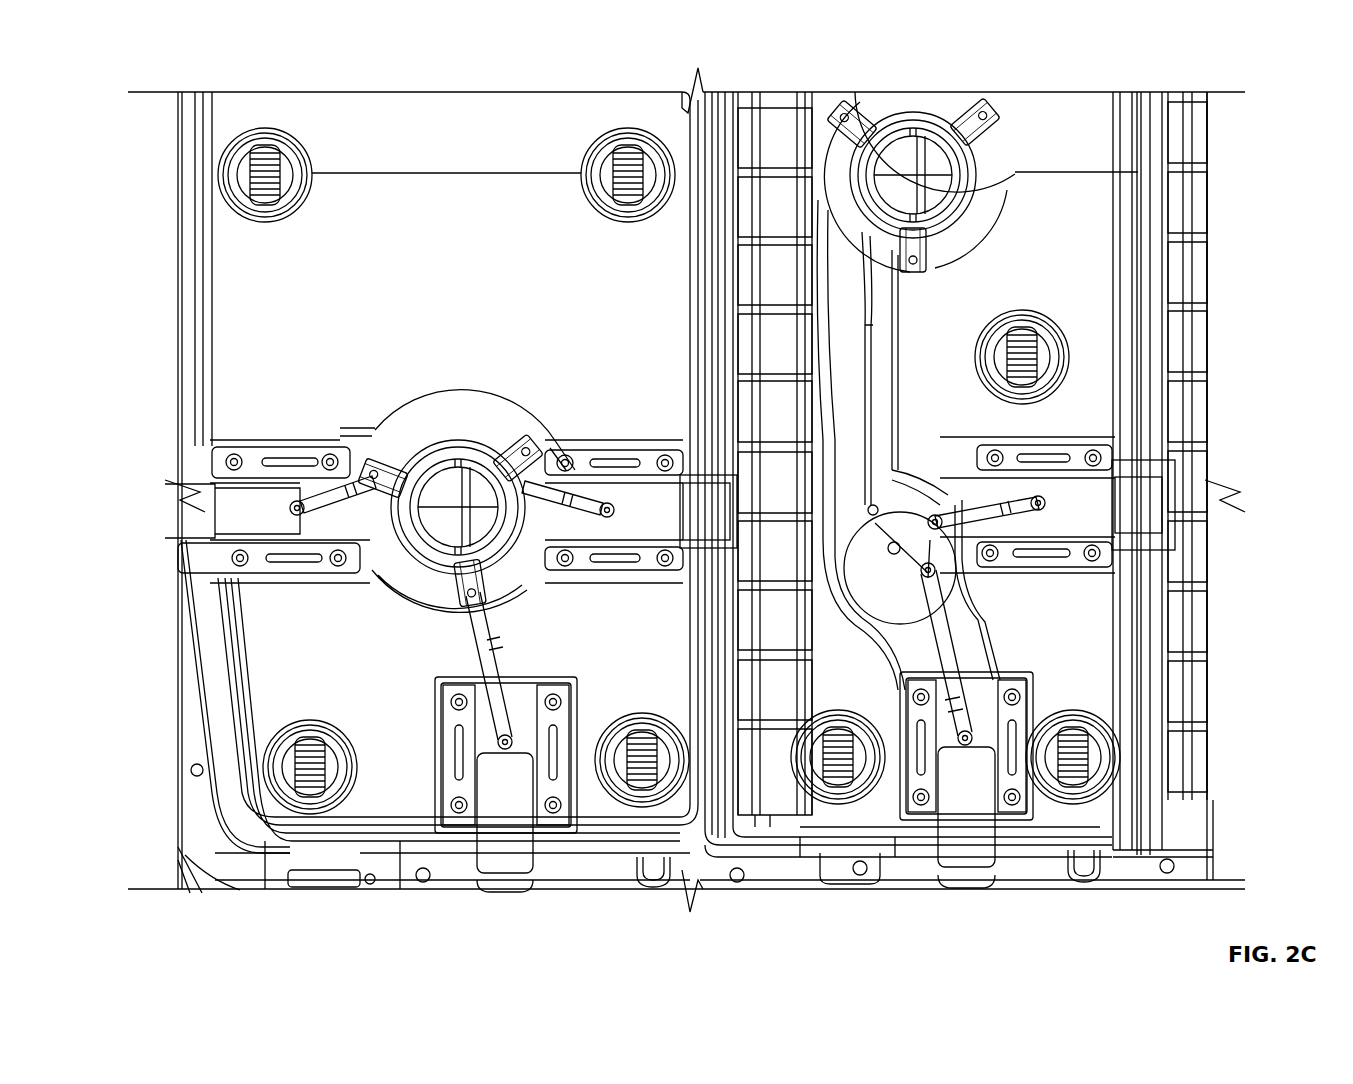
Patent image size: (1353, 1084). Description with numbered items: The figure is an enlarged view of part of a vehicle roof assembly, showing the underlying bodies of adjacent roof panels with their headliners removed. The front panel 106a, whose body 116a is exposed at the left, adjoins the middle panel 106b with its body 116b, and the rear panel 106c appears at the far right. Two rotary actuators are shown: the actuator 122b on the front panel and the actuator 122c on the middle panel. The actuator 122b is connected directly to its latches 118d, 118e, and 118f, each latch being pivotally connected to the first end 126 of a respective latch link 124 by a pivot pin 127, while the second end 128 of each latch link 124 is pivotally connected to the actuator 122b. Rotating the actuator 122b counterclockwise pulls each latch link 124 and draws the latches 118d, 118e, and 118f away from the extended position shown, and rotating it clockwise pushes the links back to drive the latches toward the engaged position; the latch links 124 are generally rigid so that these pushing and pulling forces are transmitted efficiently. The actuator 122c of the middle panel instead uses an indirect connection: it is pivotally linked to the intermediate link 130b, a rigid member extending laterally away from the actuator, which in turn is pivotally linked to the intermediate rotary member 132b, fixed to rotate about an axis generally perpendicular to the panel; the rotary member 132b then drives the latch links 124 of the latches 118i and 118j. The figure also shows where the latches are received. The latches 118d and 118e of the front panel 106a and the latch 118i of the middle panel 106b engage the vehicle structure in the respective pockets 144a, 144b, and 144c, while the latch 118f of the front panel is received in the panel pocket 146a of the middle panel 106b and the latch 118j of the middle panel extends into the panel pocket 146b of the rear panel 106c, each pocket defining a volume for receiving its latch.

The front panel 106a is at (268, 88).
The middle panel 106b is at (1072, 88).
The rear panel 106c is at (1192, 88).
The body of the front panel 116a is at (432, 222).
The body of the middle panel 116b is at (1103, 154).
The latch 118d is at (185, 490).
The latch 118e is at (492, 830).
The latch 118f is at (695, 500).
The latch 118i is at (955, 832).
The latch 118j is at (1150, 490).
The actuator 122b is at (440, 498).
The actuator 122c is at (905, 170).
The latch link 124 is at (540, 460).
The first end of the latch link 126 is at (290, 500).
The pivot pin 127 is at (585, 472).
The second end of the latch link 128 is at (495, 460).
The intermediate link 130b is at (862, 352).
The intermediate rotary member 132b is at (882, 560).
The pocket 144a is at (265, 505).
The pocket 144b is at (535, 880).
The pocket 144c is at (992, 880).
The panel pocket 146a is at (705, 545).
The panel pocket 146b is at (1150, 515).